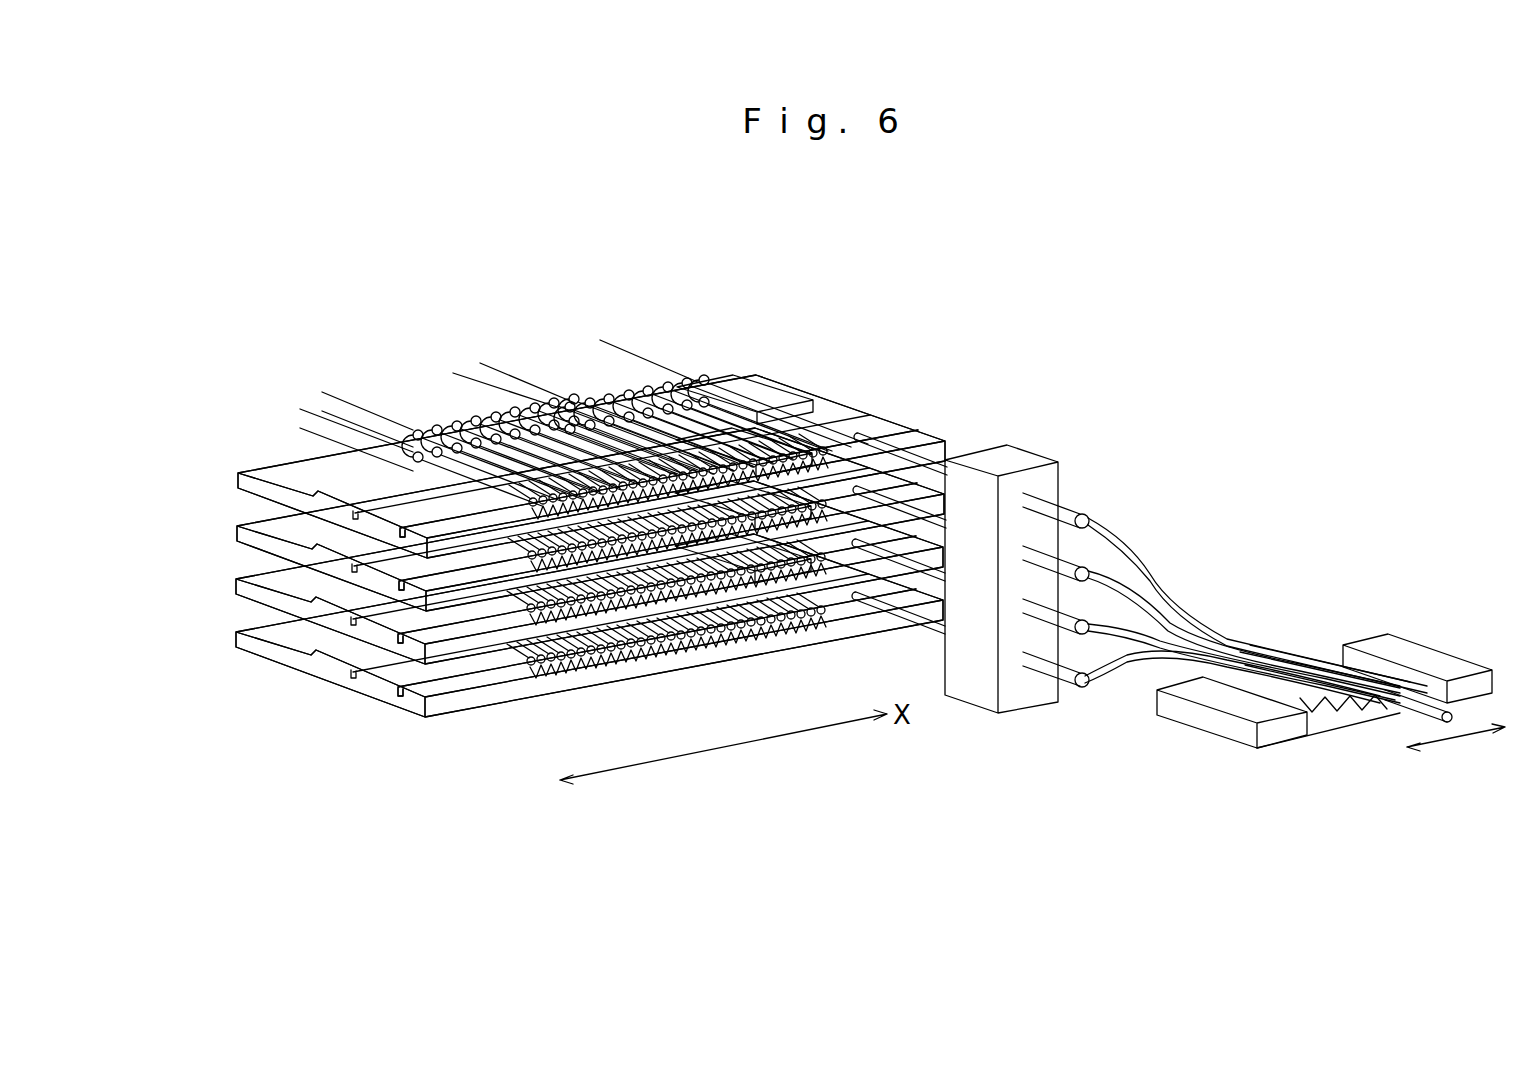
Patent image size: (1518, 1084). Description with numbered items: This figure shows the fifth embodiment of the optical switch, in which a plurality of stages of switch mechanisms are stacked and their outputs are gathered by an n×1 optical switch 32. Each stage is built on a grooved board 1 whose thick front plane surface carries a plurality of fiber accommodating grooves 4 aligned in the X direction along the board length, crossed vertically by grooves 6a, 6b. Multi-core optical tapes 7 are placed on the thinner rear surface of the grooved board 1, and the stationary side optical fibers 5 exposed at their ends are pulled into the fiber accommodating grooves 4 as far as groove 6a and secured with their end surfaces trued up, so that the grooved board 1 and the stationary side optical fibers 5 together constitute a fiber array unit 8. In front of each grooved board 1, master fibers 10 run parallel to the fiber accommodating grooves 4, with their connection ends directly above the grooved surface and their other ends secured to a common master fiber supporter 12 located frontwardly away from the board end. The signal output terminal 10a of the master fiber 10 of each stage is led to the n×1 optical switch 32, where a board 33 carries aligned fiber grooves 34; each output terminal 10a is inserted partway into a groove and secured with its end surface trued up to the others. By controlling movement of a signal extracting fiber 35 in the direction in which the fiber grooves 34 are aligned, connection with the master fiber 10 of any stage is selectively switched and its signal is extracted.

The grooved board 1 is at (262, 690).
The fiber accommodating grooves 4 is at (553, 517).
The stationary side optical fibers 5 is at (447, 451).
The groove 6a is at (372, 528).
The groove 6b is at (352, 506).
The multi-core optical tapes 7 is at (623, 357).
The fiber array unit 8 is at (280, 467).
The master fibers 10 is at (873, 489).
The output terminal 10a is at (1125, 545).
The master fiber supporter 12 is at (1030, 703).
The n×1 optical switch 32 is at (1331, 734).
The board 33 is at (1197, 720).
The fiber grooves 34 is at (1313, 713).
The signal extracting fiber 35 is at (1393, 713).